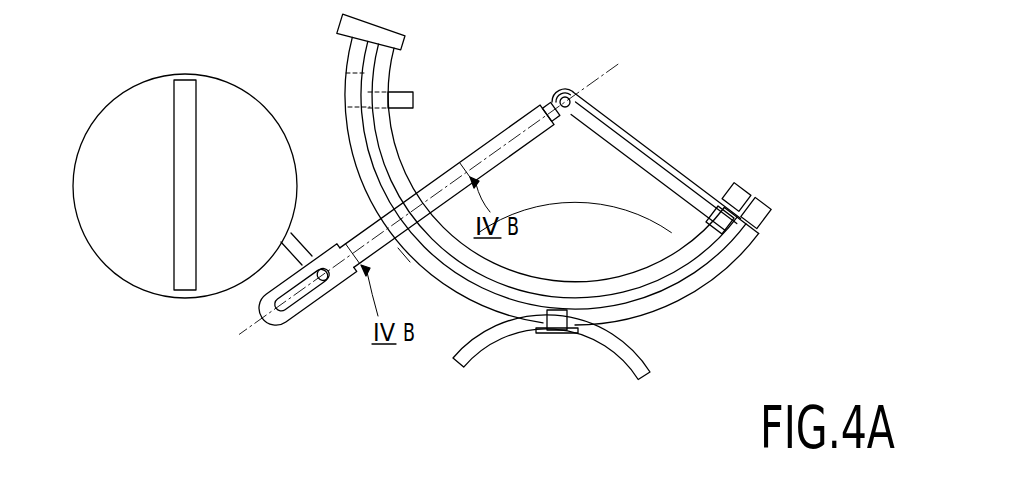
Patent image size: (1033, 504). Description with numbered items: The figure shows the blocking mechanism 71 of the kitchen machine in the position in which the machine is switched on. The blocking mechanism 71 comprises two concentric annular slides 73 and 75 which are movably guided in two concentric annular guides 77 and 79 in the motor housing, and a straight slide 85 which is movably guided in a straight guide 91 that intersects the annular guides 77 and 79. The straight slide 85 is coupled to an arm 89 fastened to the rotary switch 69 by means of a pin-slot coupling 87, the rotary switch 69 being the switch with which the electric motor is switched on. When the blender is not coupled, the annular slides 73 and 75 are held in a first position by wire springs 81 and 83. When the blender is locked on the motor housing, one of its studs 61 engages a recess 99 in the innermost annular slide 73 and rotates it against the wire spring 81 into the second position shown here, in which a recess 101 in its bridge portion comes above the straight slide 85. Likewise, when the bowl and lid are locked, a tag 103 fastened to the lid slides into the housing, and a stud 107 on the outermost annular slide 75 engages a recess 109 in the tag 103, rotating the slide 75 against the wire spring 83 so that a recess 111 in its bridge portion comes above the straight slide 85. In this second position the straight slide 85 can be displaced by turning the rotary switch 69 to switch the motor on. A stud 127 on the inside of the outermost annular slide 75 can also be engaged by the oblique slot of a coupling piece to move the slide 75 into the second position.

The stud 61 is at (406, 92).
The rotary switch 69 is at (138, 268).
The blocking mechanism 71 is at (760, 72).
The innermost annular slide 73 is at (388, 143).
The outermost annular slide 75 is at (350, 122).
The annular guide 77 is at (731, 196).
The annular guide 79 is at (757, 211).
The wire spring 81 is at (664, 186).
The wire spring 83 is at (678, 170).
The straight slide 85 is at (527, 122).
The pin-slot coupling 87 is at (297, 298).
The arm 89 is at (301, 247).
The straight guide 91 is at (553, 97).
The recess 99 is at (352, 88).
The recess 101 is at (458, 243).
The tag 103 is at (486, 349).
The stud 107 is at (557, 310).
The recess 109 is at (555, 333).
The recess 111 is at (403, 256).
The stud 127 is at (733, 231).